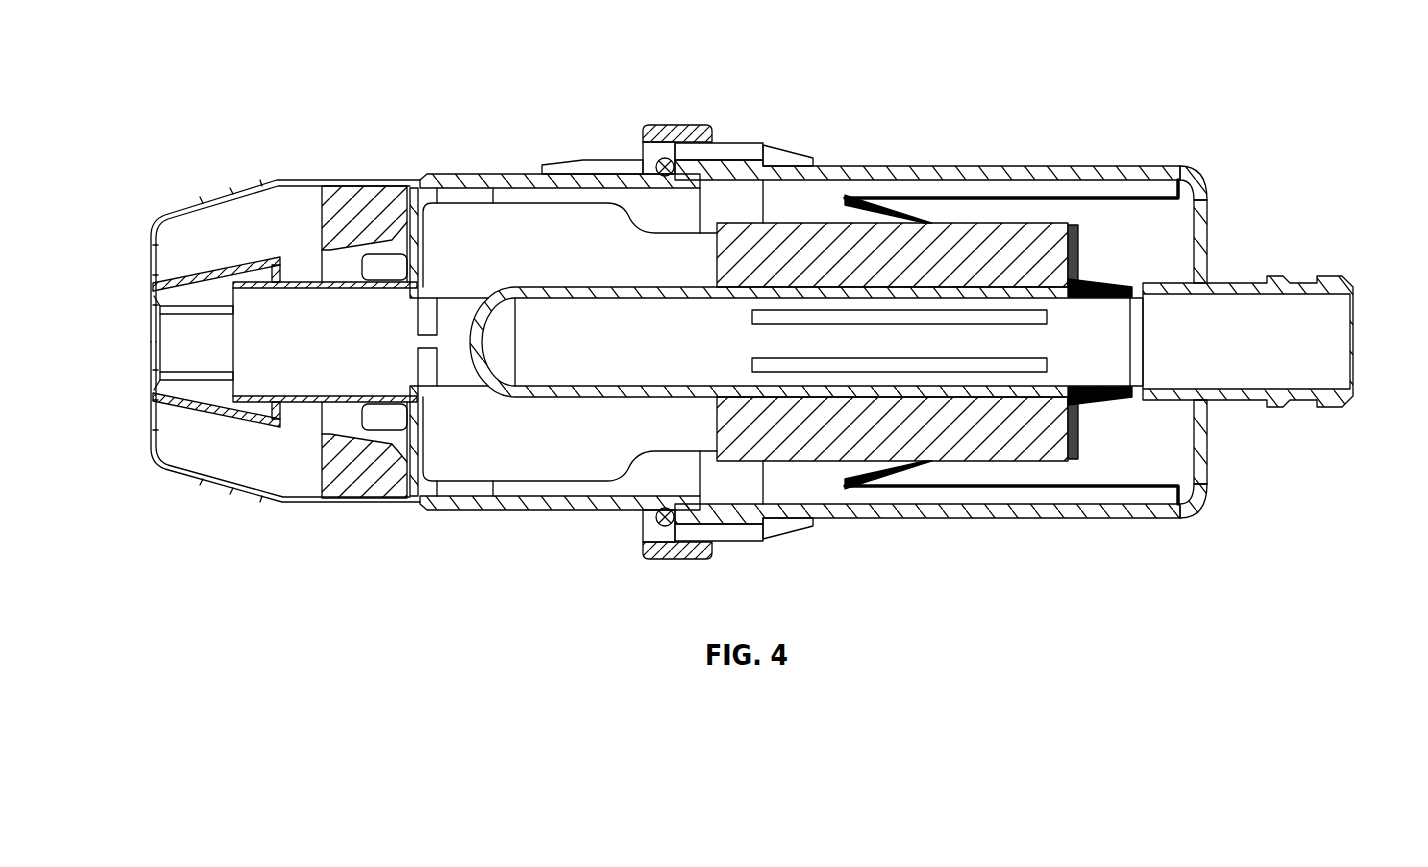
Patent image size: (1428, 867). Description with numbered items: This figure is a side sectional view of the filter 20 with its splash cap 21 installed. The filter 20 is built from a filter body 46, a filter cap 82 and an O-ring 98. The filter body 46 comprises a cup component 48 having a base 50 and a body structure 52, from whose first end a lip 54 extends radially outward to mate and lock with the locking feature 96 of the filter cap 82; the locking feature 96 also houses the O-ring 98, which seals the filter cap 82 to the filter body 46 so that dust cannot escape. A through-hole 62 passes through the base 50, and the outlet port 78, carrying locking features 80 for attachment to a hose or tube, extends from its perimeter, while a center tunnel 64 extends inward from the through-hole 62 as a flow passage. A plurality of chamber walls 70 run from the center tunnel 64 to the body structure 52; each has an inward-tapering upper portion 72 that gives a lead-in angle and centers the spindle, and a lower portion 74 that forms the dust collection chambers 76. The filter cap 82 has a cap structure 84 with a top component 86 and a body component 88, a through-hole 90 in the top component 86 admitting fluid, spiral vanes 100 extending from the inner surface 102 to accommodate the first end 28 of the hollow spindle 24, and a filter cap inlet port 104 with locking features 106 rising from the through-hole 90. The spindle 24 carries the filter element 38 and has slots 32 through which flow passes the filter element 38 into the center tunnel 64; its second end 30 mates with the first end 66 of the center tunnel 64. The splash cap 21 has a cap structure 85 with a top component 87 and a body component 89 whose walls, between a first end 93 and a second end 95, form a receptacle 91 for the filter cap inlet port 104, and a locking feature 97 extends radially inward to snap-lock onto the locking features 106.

The filter 20 is at (108, 118).
The splash cap 21 is at (170, 476).
The spindle 24 is at (1062, 388).
The first end 28 is at (490, 345).
The second end 30 is at (1095, 287).
The slots 32 is at (750, 366).
The filter element 38 is at (838, 428).
The filter body 46 is at (1157, 508).
The cup component 48 is at (1195, 180).
The base 50 is at (1203, 212).
The body structure 52 is at (1013, 167).
The lip 54 is at (730, 145).
The through-hole 62 is at (1200, 377).
The center tunnel 64 is at (1103, 338).
The first end 66 is at (1133, 277).
The chamber walls 70 is at (927, 197).
The upper portion 72 is at (882, 476).
The lower portion 74 is at (1118, 438).
The collection chambers 76 is at (807, 214).
The outlet port 78 is at (1330, 398).
The locking features 80 is at (1277, 280).
The filter cap 82 is at (538, 505).
The cap structure 84 is at (520, 175).
The cap structure 85 is at (143, 263).
The top component 86 is at (423, 275).
The top component 87 is at (160, 312).
The body component 88 is at (597, 512).
The body component 89 is at (215, 470).
The through-hole 90 is at (408, 315).
The receptacle 91 is at (230, 422).
The first end 93 is at (410, 508).
The second end 95 is at (160, 227).
The locking feature 96 is at (680, 126).
The locking feature 97 is at (277, 262).
The O-ring 98 is at (660, 160).
The vanes 100 is at (447, 227).
The inner surface 102 is at (423, 437).
The filter cap inlet port 104 is at (347, 393).
The locking features 106 is at (243, 272).